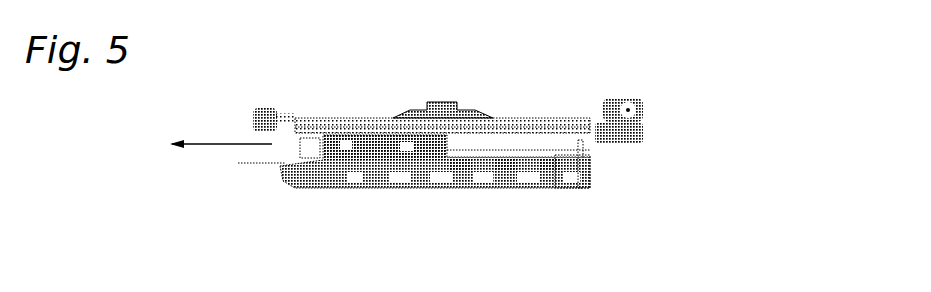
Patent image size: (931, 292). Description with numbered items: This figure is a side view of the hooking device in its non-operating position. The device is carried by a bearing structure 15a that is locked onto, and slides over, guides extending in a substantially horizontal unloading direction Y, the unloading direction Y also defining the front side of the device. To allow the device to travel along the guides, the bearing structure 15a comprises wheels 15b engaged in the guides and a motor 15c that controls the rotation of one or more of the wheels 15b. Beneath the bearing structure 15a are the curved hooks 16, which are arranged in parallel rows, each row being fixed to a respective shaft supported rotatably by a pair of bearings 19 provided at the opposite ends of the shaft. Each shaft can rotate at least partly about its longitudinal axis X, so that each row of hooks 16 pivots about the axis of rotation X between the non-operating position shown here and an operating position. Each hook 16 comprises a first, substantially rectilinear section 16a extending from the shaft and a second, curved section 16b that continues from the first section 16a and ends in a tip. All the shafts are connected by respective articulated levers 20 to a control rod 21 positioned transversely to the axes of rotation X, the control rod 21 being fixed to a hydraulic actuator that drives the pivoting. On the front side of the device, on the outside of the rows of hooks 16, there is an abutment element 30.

The bearing structure 15a is at (338, 110).
The wheels 15b is at (264, 108).
The motor 15c is at (640, 106).
The curved hooks 16 is at (524, 148).
The first rectilinear section 16a is at (550, 158).
The second curved section 16b is at (564, 160).
The bearings 19 is at (373, 177).
The articulated levers 20 is at (445, 155).
The control rod 21 is at (367, 143).
The abutment element 30 is at (240, 168).
The longitudinal axis X is at (337, 170).
The unloading direction Y is at (213, 143).